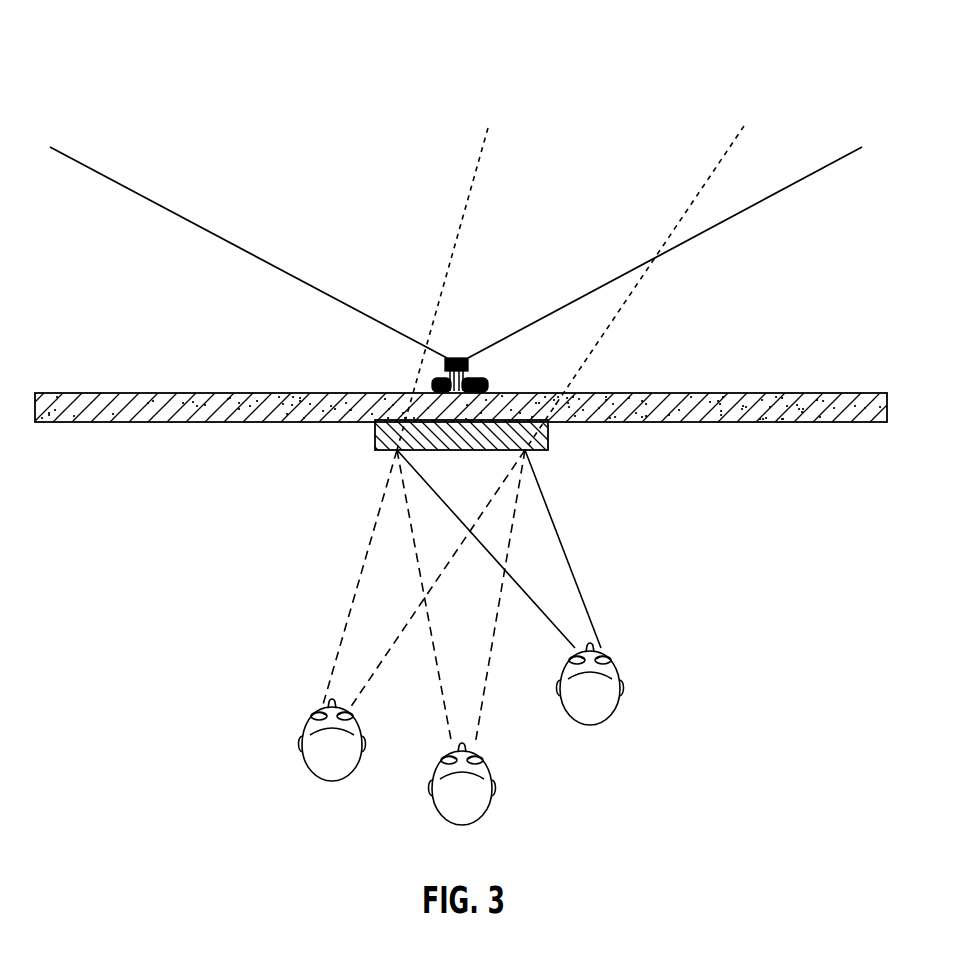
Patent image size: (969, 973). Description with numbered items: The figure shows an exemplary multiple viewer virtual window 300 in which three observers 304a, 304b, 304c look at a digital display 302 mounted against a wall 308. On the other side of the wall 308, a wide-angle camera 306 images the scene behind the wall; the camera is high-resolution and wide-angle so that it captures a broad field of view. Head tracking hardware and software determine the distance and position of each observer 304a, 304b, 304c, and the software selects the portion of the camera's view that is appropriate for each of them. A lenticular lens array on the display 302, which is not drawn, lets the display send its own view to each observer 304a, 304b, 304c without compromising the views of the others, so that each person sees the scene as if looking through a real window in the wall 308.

The multiple viewer virtual window 300 is at (762, 65).
The digital display 302 is at (368, 435).
The observer 304a is at (308, 785).
The observer 304b is at (438, 822).
The observer 304c is at (612, 723).
The wide-angle camera 306 is at (483, 372).
The wall 308 is at (813, 390).